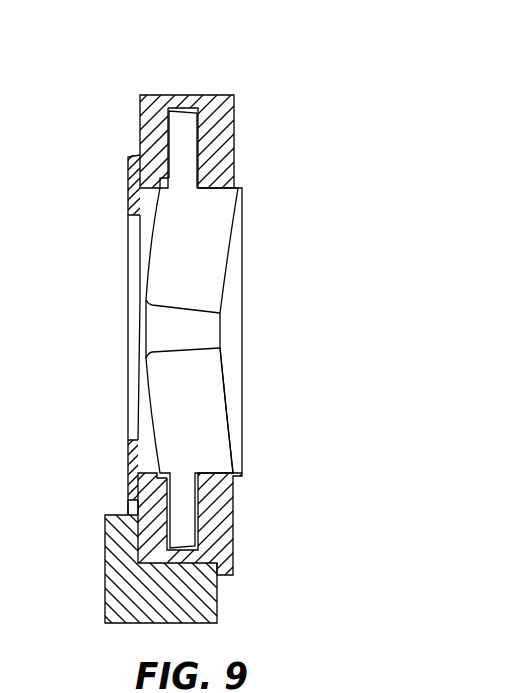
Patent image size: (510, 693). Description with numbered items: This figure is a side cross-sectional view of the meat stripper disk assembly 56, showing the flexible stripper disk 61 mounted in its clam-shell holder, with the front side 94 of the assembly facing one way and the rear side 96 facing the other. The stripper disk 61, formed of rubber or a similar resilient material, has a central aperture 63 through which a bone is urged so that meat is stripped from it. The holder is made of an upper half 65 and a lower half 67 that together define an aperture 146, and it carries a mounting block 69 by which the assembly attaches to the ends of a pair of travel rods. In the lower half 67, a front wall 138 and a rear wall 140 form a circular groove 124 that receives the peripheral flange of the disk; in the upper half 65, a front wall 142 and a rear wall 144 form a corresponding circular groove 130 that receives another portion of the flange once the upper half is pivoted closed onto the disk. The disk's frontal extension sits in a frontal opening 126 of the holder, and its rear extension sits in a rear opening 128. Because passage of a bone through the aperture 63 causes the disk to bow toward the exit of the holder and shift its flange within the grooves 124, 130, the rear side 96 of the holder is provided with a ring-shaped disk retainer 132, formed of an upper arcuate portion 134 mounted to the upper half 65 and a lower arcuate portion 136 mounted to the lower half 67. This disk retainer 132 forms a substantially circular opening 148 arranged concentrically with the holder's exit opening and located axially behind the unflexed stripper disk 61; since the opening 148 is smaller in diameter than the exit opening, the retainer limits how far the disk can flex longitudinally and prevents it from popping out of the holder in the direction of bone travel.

The meat stripper disk assembly 56 is at (231, 70).
The front side 94 is at (302, 97).
The rear side 96 is at (123, 123).
The circular groove 130 is at (171, 111).
The front wall 142 is at (231, 125).
The rear wall 144 is at (152, 145).
The upper half 65 is at (245, 179).
The upper arcuate portion 134 is at (135, 192).
The stripper disk 61 is at (222, 228).
The aperture 63 is at (176, 327).
The rear opening 128 is at (115, 290).
The frontal opening 126 is at (258, 333).
The circular opening 148 is at (131, 425).
The aperture 146 is at (226, 450).
The lower arcuate portion 136 is at (131, 468).
The front wall 138 is at (220, 493).
The disk retainer 132 is at (115, 494).
The lower half 67 is at (245, 517).
The rear wall 140 is at (150, 540).
The circular groove 124 is at (198, 550).
The mounting block 69 is at (115, 582).